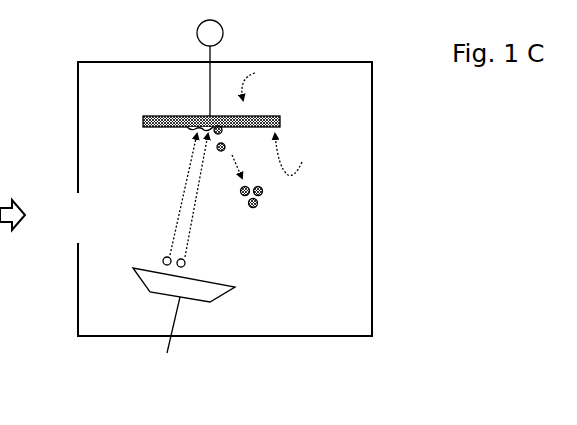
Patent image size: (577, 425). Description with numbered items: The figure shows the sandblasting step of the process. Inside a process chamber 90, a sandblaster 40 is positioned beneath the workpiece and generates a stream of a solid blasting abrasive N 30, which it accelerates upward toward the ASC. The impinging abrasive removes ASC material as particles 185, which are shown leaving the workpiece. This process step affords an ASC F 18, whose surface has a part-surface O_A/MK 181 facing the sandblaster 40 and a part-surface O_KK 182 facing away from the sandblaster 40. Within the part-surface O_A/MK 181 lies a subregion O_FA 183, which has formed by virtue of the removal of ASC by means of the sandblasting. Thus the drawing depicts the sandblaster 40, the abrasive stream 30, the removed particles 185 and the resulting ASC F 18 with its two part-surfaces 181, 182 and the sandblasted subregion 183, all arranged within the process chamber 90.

The ASC F 18 is at (143, 123).
The part-surface O_A/MK 181 is at (309, 154).
The part-surface O_KK 182 is at (277, 85).
The subregion O_FA 183 is at (195, 129).
The particles 185 is at (268, 203).
The solid blasting abrasive N 30 is at (148, 257).
The sandblaster 40 is at (243, 278).
The process chamber 90 is at (78, 292).